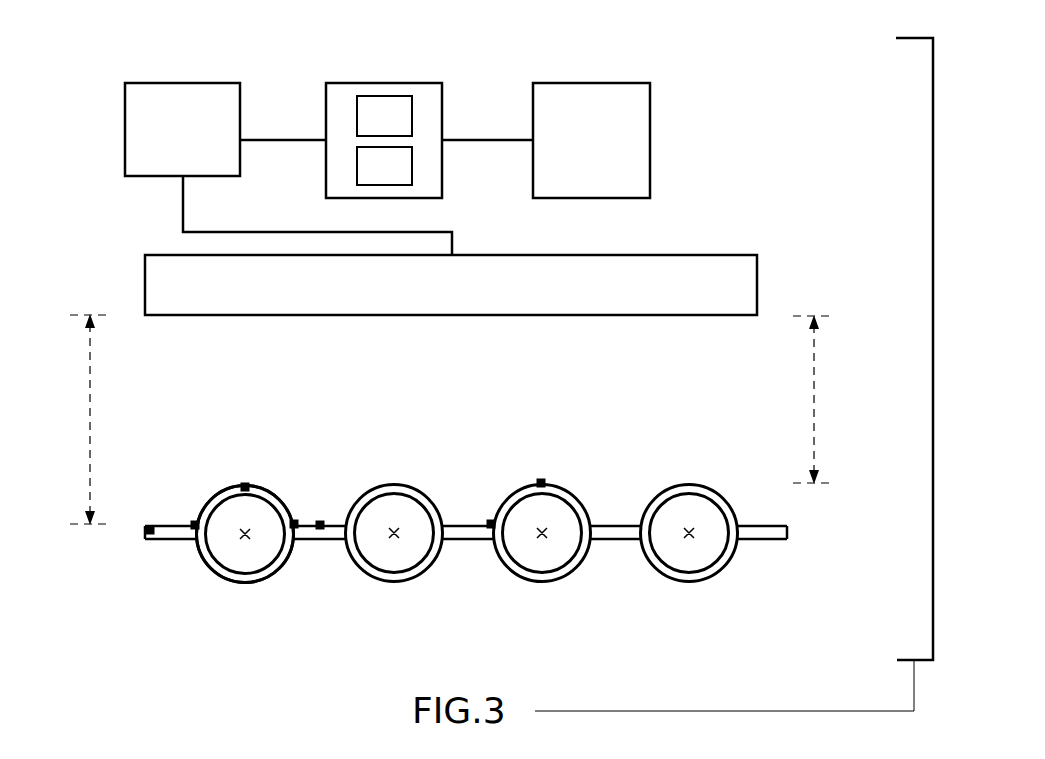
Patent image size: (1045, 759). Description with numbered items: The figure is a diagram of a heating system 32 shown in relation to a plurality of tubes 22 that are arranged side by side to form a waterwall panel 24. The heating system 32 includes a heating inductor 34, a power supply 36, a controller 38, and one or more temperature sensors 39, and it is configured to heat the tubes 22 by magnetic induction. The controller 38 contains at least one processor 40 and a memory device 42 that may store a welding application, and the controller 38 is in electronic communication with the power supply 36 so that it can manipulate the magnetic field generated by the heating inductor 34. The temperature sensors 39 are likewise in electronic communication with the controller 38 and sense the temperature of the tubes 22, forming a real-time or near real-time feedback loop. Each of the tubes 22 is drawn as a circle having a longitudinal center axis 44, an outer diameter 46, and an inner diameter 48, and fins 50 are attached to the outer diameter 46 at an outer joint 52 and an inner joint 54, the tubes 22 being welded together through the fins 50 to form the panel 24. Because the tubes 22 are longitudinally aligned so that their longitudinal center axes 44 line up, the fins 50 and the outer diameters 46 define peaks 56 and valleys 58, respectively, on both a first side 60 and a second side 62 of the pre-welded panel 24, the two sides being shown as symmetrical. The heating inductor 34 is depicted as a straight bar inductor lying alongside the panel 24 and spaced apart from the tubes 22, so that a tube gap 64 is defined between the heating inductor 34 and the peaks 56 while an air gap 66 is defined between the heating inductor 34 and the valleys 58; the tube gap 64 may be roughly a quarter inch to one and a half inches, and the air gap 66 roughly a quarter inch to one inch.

The tubes 22 is at (824, 523).
The panel 24 is at (148, 541).
The heating system 32 is at (88, 180).
The heating inductor 34 is at (437, 297).
The power supply 36 is at (168, 142).
The controller 38 is at (384, 83).
The temperature sensors 39 is at (576, 152).
The processor 40 is at (399, 127).
The memory device 42 is at (399, 177).
The longitudinal center axis 44 is at (244, 543).
The outer diameter 46 is at (242, 484).
The inner diameter 48 is at (218, 575).
The fins 50 is at (150, 526).
The outer joint 52 is at (193, 541).
The inner joint 54 is at (293, 541).
The peaks 56 is at (250, 441).
The valleys 58 is at (336, 472).
The first side 60 is at (745, 450).
The second side 62 is at (757, 582).
The tube gap 64 is at (814, 400).
The air gap 66 is at (90, 418).